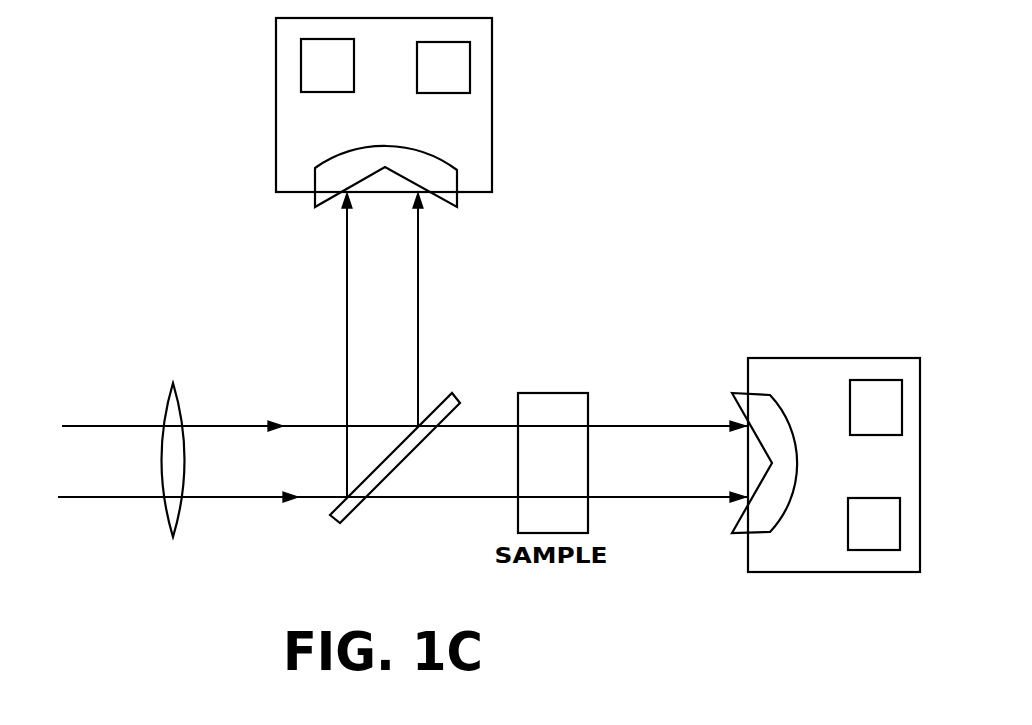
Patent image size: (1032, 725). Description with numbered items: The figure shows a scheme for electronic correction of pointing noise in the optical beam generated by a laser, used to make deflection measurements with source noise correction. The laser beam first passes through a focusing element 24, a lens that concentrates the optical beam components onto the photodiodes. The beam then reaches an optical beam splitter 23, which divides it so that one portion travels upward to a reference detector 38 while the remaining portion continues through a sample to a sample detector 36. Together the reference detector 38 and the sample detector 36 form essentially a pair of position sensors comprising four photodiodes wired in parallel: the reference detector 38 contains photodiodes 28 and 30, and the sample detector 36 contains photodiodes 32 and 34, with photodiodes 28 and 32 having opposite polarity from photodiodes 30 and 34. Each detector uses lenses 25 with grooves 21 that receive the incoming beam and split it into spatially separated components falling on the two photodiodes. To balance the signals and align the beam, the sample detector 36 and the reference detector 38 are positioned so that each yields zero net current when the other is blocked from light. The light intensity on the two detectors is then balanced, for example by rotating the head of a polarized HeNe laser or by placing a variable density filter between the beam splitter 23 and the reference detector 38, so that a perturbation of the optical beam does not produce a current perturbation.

The grooves 21 is at (363, 180).
The optical beam splitter 23 is at (357, 508).
The focusing element 24 is at (160, 402).
The lenses 25 is at (450, 163).
The photodiode 28 is at (327, 65).
The photodiode 30 is at (443, 67).
The photodiode 32 is at (876, 407).
The photodiode 34 is at (874, 524).
The sample detector 36 is at (870, 357).
The reference detector 38 is at (493, 97).